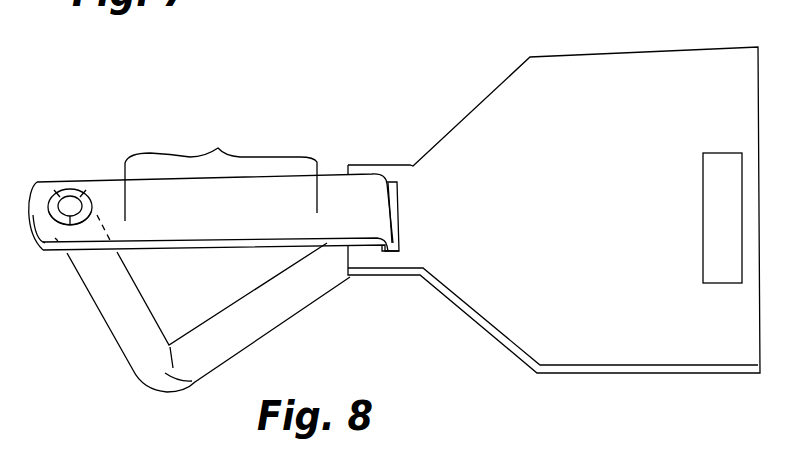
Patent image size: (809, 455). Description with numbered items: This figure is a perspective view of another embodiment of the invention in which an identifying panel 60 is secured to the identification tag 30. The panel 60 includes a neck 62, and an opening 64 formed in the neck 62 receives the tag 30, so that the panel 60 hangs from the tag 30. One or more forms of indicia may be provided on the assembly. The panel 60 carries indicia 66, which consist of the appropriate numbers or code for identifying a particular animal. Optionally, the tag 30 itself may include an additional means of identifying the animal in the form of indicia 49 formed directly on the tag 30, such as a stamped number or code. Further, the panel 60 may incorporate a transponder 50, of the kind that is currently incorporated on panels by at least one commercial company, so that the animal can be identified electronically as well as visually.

The identification device or tag 30 is at (107, 163).
The indicia 49 is at (218, 152).
The transponder 50 is at (723, 153).
The panel 60 is at (511, 90).
The neck 62 is at (378, 165).
The opening 64 is at (393, 213).
The indicia 66 is at (585, 226).